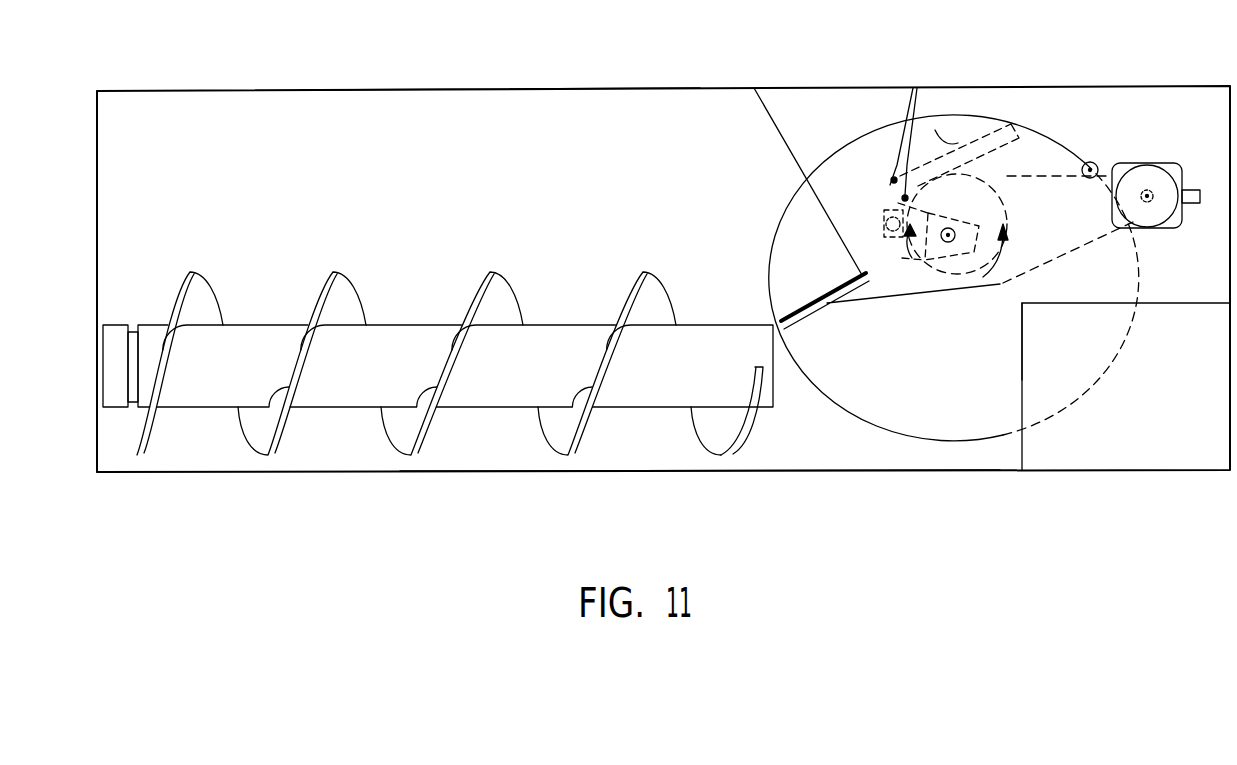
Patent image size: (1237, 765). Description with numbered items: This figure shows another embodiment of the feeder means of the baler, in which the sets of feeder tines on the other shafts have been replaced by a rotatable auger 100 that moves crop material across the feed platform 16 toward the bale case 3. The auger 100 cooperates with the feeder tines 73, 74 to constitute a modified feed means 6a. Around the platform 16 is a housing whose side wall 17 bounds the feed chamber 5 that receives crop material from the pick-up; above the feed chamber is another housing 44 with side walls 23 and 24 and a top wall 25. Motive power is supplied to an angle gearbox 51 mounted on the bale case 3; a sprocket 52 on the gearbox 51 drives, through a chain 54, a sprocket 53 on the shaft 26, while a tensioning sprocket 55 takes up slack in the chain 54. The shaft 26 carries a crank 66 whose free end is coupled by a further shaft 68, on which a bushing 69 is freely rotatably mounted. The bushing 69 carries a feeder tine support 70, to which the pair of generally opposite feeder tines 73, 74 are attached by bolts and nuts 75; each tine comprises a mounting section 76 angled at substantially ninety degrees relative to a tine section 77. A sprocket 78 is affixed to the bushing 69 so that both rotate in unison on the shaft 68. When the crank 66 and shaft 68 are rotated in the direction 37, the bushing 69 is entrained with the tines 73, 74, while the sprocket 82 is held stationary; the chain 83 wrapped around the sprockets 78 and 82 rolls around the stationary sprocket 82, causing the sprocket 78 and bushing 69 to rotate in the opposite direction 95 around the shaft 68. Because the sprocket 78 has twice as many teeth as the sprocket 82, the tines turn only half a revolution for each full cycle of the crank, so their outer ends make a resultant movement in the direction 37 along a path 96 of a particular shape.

The bale case 3 is at (1172, 471).
The feed chamber 5 is at (422, 480).
The modified feed means 6a is at (768, 487).
The feed platform 16 is at (697, 473).
The side wall 17 is at (97, 468).
The side wall 23 is at (97, 143).
The side wall 24 is at (1230, 89).
The top wall 25 is at (500, 90).
The shaft 26 is at (1020, 306).
The direction of rotation 37 is at (1004, 236).
The housing 44 is at (205, 84).
The angle gearbox 51 is at (1163, 163).
The sprocket 52 is at (1170, 226).
The sprocket 53 is at (1003, 208).
The chain 54 is at (1082, 254).
The tensioning sprocket 55 is at (1086, 162).
The crank 66 is at (942, 245).
The shaft 68 is at (884, 232).
The bushing 69 is at (882, 218).
The feeder tine support 70 is at (893, 178).
The feeder tine 73 is at (828, 308).
The feeder tine 74 is at (962, 140).
The bolts and nuts 75 is at (913, 88).
The mounting section 76 is at (890, 196).
The tine section 77 is at (935, 130).
The sprocket 78 is at (932, 250).
The sprocket 82 is at (1102, 104).
The chain 83 is at (1052, 104).
The opposite direction 95 is at (948, 243).
The path 96 is at (1115, 347).
The rotatable auger 100 is at (383, 325).